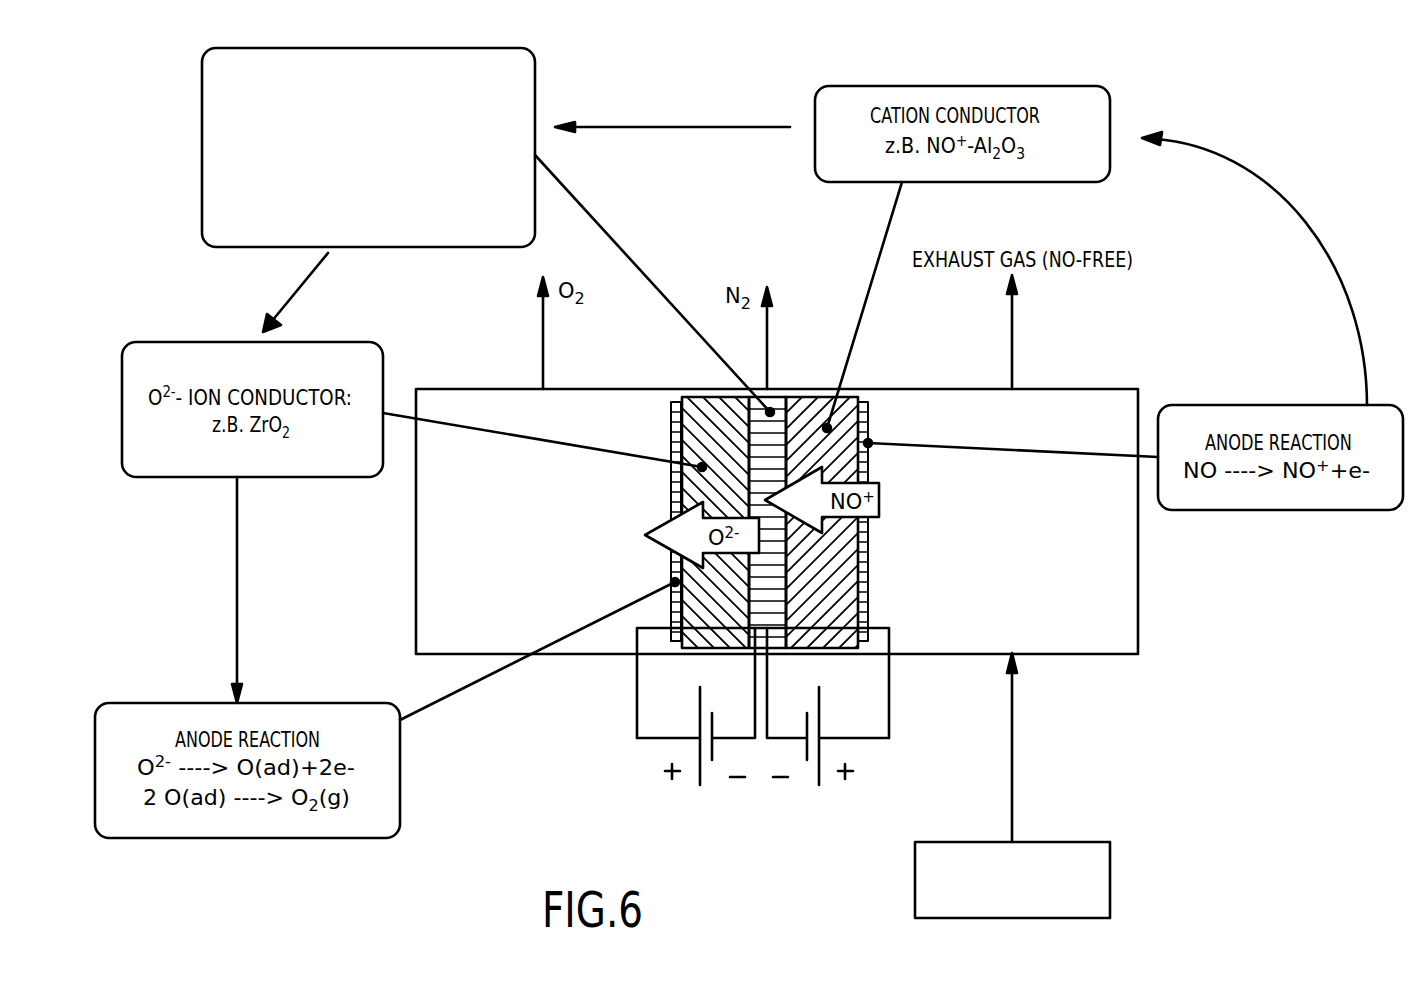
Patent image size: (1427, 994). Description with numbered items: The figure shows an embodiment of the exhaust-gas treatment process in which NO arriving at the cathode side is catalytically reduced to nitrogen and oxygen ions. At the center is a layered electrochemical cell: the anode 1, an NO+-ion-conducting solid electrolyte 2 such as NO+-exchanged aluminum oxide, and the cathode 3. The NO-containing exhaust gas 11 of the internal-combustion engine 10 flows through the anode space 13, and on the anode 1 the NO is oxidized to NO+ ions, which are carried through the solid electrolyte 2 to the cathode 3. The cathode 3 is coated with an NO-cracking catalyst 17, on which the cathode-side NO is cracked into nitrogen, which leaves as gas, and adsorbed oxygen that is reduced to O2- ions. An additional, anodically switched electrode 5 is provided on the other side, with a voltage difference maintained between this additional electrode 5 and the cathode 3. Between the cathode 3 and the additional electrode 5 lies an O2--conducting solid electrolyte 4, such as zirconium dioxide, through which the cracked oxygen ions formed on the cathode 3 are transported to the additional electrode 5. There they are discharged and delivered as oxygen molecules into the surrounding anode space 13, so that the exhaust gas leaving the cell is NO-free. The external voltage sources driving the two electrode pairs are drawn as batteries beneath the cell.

The anode 1 is at (868, 412).
The cation-conducting solid electrolyte 2 is at (806, 404).
The cathode 3 is at (780, 408).
The O2- conducting solid electrolyte 4 is at (703, 397).
The additional electrode 5 is at (671, 425).
The internal-combustion engine 10 is at (915, 880).
The NO-containing exhaust gas 11 is at (1110, 712).
The anode space 13 is at (435, 545).
The NO-cracking catalyst 17 is at (202, 152).